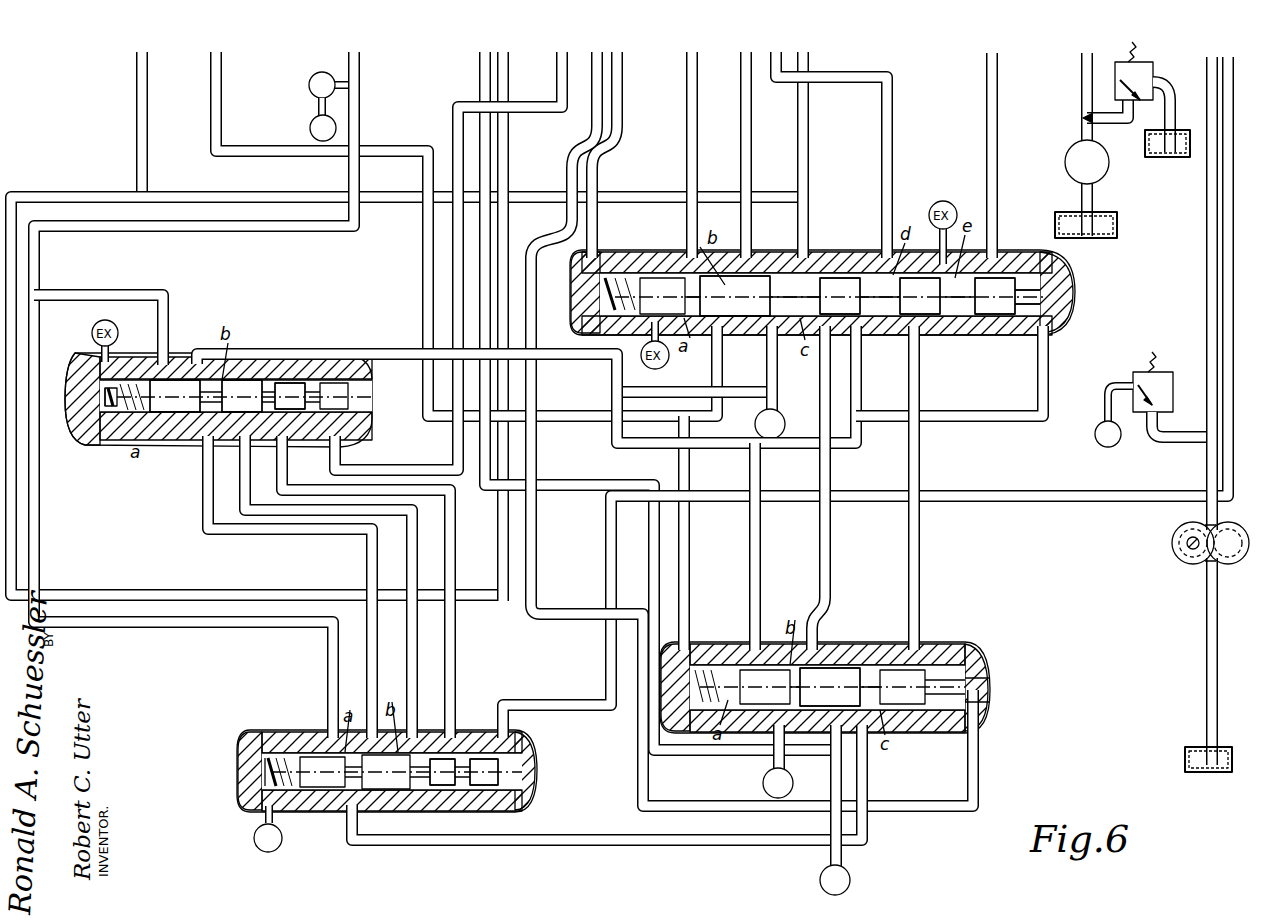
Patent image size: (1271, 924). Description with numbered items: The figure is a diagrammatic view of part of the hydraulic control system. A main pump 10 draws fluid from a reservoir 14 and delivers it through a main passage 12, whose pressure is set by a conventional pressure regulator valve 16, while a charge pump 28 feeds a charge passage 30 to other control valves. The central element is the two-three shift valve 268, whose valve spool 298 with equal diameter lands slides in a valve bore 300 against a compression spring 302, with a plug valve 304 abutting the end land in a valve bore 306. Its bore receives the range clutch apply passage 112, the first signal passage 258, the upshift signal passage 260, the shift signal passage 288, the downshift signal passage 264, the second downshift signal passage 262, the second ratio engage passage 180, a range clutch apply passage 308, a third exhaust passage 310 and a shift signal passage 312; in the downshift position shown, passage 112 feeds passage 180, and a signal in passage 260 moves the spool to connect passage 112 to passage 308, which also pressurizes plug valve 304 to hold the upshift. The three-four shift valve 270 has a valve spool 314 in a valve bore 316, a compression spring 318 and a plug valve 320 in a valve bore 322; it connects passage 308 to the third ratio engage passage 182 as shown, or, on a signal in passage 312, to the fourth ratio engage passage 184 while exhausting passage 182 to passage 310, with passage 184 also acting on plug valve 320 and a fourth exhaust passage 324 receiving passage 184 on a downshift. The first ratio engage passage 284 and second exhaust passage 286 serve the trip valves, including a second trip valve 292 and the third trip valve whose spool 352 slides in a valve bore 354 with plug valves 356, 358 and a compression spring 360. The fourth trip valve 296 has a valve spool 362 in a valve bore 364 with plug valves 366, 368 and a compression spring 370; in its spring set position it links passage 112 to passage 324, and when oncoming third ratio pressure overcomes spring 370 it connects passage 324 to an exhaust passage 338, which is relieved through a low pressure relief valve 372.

The main pump 10 is at (1228, 522).
The main passage 12 is at (1207, 97).
The reservoir 14 is at (1232, 747).
The pressure regulator valve 16 is at (1143, 372).
The charge pump 28 is at (1110, 160).
The charge passage 30 is at (1081, 92).
The 2-4 range clutch apply passage 112 is at (136, 95).
The second ratio engage passage 180 is at (603, 96).
The third ratio engage passage 182 is at (480, 72).
The fourth ratio engage passage 184 is at (557, 92).
The 1-2, 3-4 signal passage 258 is at (777, 85).
The 2-3 signal passage 260 is at (986, 188).
The 2-1, 4-3 signal passage 262 is at (222, 80).
The 3-2 signal passage 264 is at (623, 80).
The 2-3 shift valve 268 is at (1082, 288).
The 3-4 shift valve 270 is at (992, 655).
The first ratio engage passage 284 is at (504, 82).
The second exhaust passage 286 is at (742, 85).
The 2-1 shift signal passage 288 is at (698, 118).
The second trip valve 292 is at (160, 470).
The fourth trip valve 296 is at (545, 758).
The valve spool 298 is at (920, 318).
The valve bore 300 is at (832, 278).
The compression spring 302 is at (605, 300).
The plug valve 304 is at (1010, 318).
The valve bore 306 is at (1015, 290).
The 3-4 range clutch apply passage 308 is at (808, 390).
The third exhaust passage 310 is at (200, 345).
The 3-4 shift signal passage 312 is at (920, 465).
The valve spool 314 is at (818, 625).
The valve bore 316 is at (848, 668).
The compression spring 318 is at (688, 715).
The plug valve 320 is at (935, 670).
The valve bore 322 is at (948, 705).
The fourth exhaust passage 324 is at (868, 790).
The exhaust passage 338 is at (360, 70).
The valve land 352 is at (145, 415).
The valve bore 354 is at (108, 388).
The plug valve 356 is at (265, 380).
The plug valve 358 is at (310, 383).
The compression spring 360 is at (104, 408).
The valve spool 362 is at (300, 805).
The valve bore 364 is at (265, 760).
The plug valve 366 is at (440, 786).
The plug valve 368 is at (485, 786).
The compression spring 370 is at (262, 775).
The low pressure relief valve 372 is at (310, 90).